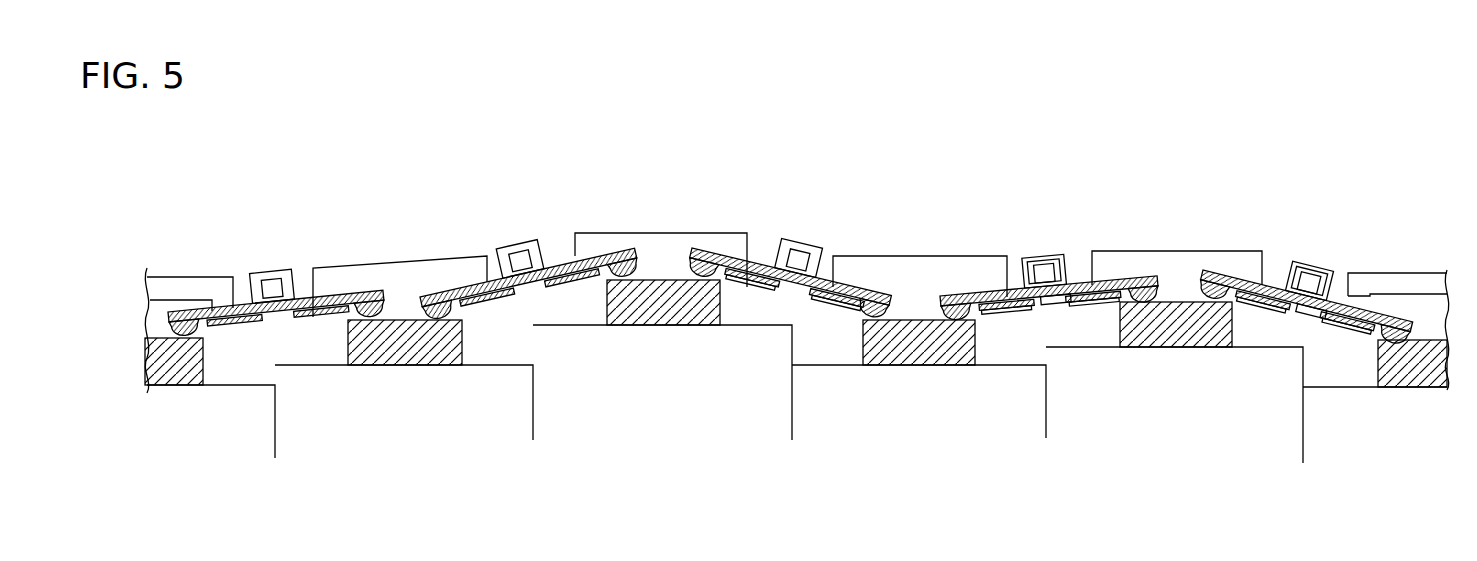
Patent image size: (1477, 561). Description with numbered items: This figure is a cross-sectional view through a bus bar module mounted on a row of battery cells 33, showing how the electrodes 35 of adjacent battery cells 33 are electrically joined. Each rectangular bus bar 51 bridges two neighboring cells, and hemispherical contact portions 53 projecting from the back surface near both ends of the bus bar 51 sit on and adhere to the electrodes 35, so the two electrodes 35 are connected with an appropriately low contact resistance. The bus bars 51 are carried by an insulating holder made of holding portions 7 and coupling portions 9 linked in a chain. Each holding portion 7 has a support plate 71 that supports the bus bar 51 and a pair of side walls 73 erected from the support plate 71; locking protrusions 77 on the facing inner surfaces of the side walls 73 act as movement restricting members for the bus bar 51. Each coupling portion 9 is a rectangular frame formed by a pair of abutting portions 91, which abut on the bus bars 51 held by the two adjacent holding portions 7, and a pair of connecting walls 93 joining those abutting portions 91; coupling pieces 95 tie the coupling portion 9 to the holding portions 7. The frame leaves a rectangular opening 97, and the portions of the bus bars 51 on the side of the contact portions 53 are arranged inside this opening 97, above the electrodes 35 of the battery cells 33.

The holding portion 7 is at (273, 259).
The coupling portion 9 is at (217, 259).
The battery cell 33 is at (218, 384).
The electrode 35 is at (178, 360).
The bus bar 51 is at (222, 305).
The contact portion 53 is at (188, 313).
The support plate 71 is at (1050, 312).
The side wall 73 is at (1010, 270).
The locking protrusion 77 is at (1042, 280).
The abutting portion 91 is at (985, 318).
The connecting wall 93 is at (1218, 258).
The coupling piece 95 is at (1010, 308).
The opening 97 is at (403, 325).